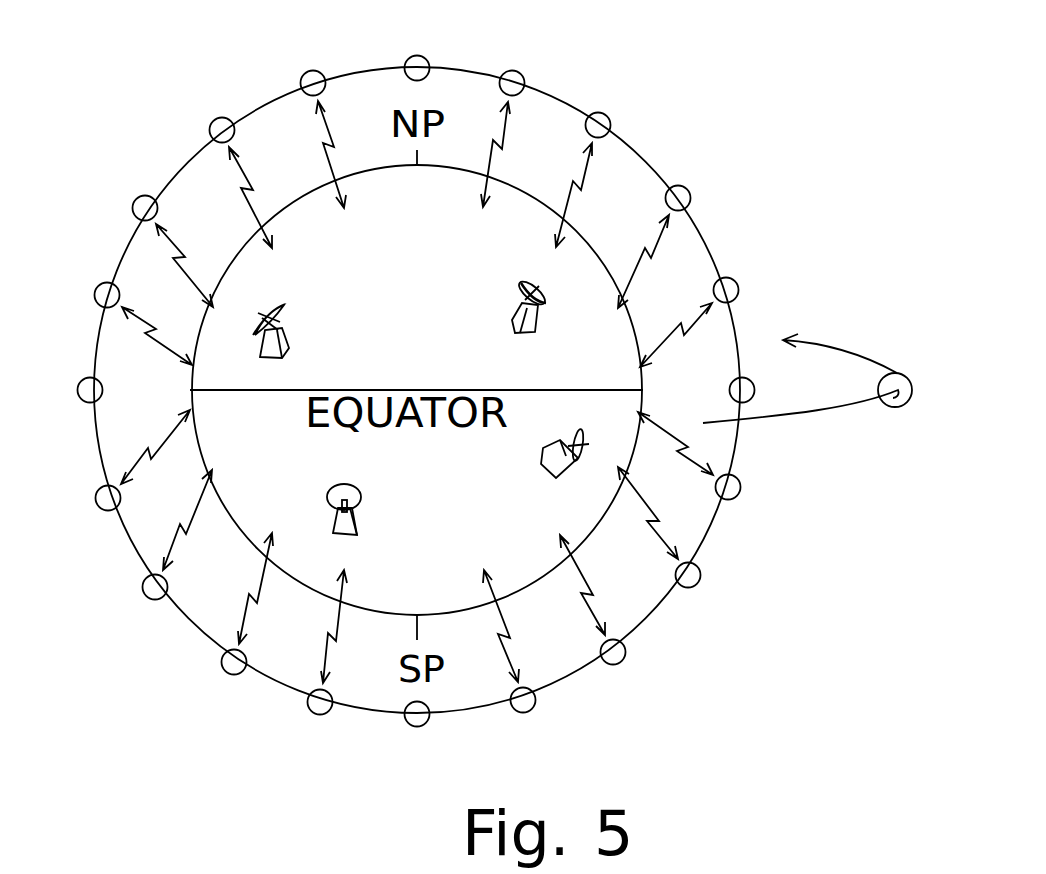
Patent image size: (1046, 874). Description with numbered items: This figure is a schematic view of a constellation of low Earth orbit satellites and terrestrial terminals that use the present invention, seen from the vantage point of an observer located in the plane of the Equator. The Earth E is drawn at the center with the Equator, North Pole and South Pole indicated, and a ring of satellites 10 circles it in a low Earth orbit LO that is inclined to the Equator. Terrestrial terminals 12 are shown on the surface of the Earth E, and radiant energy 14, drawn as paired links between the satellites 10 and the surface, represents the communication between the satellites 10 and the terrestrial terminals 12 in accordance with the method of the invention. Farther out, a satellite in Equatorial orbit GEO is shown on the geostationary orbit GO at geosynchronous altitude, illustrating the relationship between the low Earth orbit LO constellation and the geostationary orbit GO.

The satellite in an orbit inclined to the Equator 10 is at (302, 78).
The terrestrial terminal 12 is at (522, 304).
The radiant energy 14 is at (503, 155).
The Earth E is at (248, 242).
The low Earth orbit LO is at (370, 70).
The satellite in Equatorial orbit GEO is at (906, 382).
The geostationary orbit GO is at (812, 413).